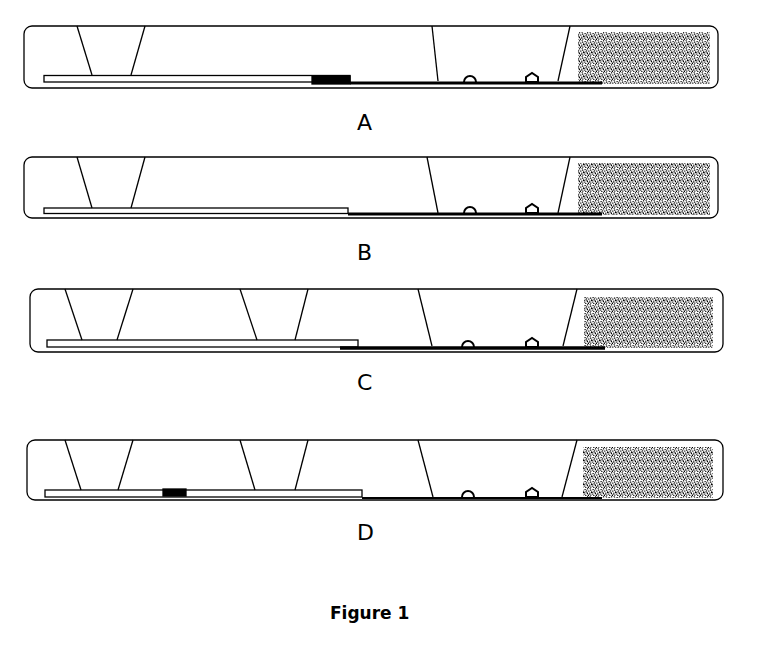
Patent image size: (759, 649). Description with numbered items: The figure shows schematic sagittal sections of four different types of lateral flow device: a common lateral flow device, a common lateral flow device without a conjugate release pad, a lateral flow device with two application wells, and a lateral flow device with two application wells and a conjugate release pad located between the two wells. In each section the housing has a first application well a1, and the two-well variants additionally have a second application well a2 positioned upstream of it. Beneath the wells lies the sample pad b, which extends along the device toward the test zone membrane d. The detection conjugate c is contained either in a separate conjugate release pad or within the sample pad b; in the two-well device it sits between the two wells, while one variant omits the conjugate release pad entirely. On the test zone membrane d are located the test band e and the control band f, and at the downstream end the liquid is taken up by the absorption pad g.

The first application well a1 is at (192, 249).
The second application well a2 is at (99, 380).
The sample pad b is at (203, 277).
The detection conjugate c is at (256, 277).
The test zone membrane d is at (472, 278).
The test band e is at (469, 275).
The control band f is at (532, 275).
The absorption pad g is at (645, 265).